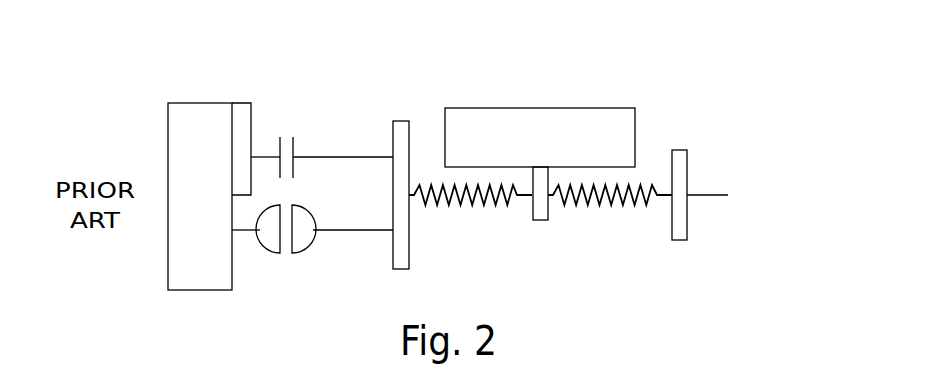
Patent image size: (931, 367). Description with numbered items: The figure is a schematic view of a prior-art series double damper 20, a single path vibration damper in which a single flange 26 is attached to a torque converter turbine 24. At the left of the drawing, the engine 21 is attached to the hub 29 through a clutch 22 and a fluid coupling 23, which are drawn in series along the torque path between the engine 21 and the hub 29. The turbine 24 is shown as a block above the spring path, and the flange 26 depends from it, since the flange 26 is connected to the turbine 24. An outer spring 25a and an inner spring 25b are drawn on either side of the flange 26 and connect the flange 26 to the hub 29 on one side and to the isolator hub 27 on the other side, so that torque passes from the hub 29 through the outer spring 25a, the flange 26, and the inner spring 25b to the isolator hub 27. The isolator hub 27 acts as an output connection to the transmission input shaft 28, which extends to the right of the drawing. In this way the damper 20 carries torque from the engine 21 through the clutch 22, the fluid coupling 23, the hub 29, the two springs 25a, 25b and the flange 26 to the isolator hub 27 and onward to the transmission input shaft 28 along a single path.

The series double damper 20 is at (653, 84).
The engine 21 is at (185, 102).
The clutch 22 is at (288, 133).
The fluid coupling 23 is at (285, 258).
The turbine 24 is at (523, 108).
The outer spring 25a is at (458, 212).
The inner spring 25b is at (608, 208).
The flange 26 is at (537, 222).
The isolator hub 27 is at (678, 158).
The transmission input shaft 28 is at (712, 192).
The hub 29 is at (402, 120).